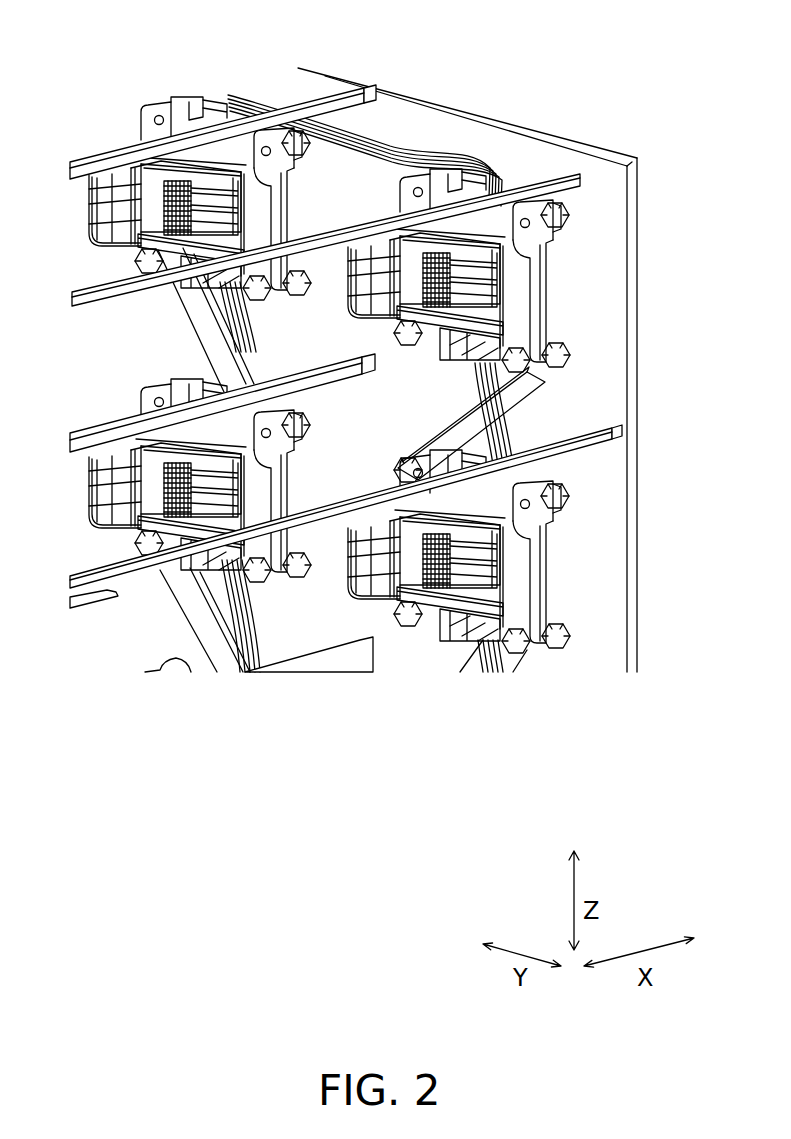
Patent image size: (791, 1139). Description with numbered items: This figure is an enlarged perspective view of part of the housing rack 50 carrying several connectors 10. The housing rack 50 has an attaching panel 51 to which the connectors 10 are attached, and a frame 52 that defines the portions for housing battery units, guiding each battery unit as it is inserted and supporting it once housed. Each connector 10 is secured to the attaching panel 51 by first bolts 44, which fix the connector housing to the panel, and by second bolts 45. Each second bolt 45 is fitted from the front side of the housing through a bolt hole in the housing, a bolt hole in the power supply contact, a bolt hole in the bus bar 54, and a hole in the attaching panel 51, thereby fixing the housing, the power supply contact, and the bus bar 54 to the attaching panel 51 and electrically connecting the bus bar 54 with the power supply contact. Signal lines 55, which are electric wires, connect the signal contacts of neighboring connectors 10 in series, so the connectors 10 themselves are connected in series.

The connector 10 is at (510, 360).
The first bolt 44 is at (451, 352).
The second bolt 45 is at (402, 350).
The housing rack 50 is at (510, 360).
The attaching panel 51 is at (527, 148).
The frame 52 is at (577, 175).
The bus bar 54 is at (487, 387).
The signal lines 55 is at (414, 140).